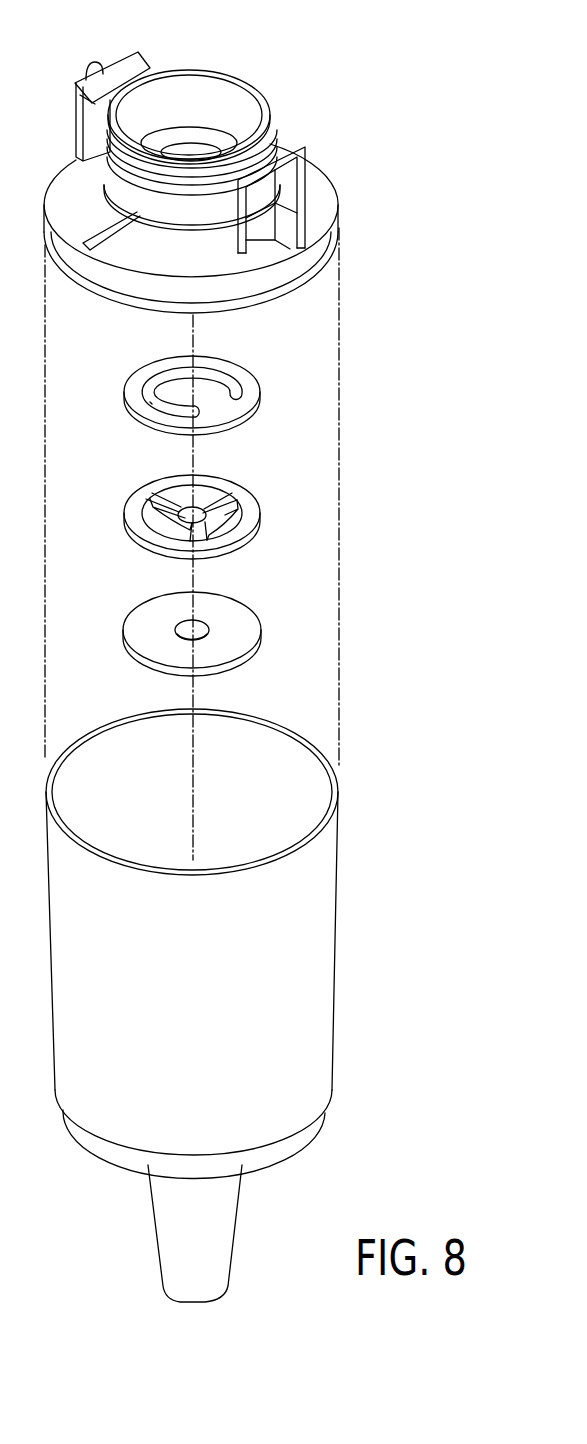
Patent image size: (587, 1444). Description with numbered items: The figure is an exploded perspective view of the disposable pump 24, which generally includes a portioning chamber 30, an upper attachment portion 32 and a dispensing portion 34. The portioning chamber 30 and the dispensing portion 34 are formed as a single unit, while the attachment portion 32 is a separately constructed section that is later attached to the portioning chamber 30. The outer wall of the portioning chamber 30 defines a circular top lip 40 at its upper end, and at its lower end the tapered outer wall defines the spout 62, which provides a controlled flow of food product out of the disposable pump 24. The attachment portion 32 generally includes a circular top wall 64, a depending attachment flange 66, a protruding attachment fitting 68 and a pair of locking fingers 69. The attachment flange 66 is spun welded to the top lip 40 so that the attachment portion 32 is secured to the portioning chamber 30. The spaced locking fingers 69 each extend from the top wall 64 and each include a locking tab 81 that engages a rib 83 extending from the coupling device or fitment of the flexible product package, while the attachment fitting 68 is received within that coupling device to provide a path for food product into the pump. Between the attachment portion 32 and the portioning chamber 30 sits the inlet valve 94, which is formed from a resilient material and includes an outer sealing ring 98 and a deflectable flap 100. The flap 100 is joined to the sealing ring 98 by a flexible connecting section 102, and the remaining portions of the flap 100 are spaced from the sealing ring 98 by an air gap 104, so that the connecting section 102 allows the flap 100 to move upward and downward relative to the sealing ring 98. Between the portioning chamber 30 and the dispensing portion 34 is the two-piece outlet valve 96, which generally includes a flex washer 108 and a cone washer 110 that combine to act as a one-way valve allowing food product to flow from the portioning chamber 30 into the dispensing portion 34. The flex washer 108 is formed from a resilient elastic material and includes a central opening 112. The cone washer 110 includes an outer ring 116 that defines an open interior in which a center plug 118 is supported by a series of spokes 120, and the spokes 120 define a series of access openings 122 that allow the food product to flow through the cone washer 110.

The disposable pump 24 is at (378, 692).
The portioning chamber 30 is at (244, 1005).
The attachment portion 32 is at (239, 172).
The dispensing portion 34 is at (270, 1208).
The top lip 40 is at (338, 791).
The spout 62 is at (178, 1232).
The top wall 64 is at (320, 165).
The attachment flange 66 is at (300, 262).
The attachment fitting 68 is at (259, 84).
The locking fingers 69 is at (116, 58).
The locking tab 81 is at (140, 60).
The rib 83 is at (185, 214).
The inlet valve 94 is at (197, 394).
The outlet valve 96 is at (219, 637).
The outer sealing ring 98 is at (133, 390).
The deflectable flap 100 is at (178, 383).
The connecting section 102 is at (222, 417).
The air gap 104 is at (150, 402).
The flex washer 108 is at (265, 628).
The cone washer 110 is at (197, 526).
The central opening 112 is at (174, 632).
The outer ring 116 is at (250, 503).
The center plug 118 is at (157, 493).
The spokes 120 is at (207, 500).
The access openings 122 is at (230, 527).